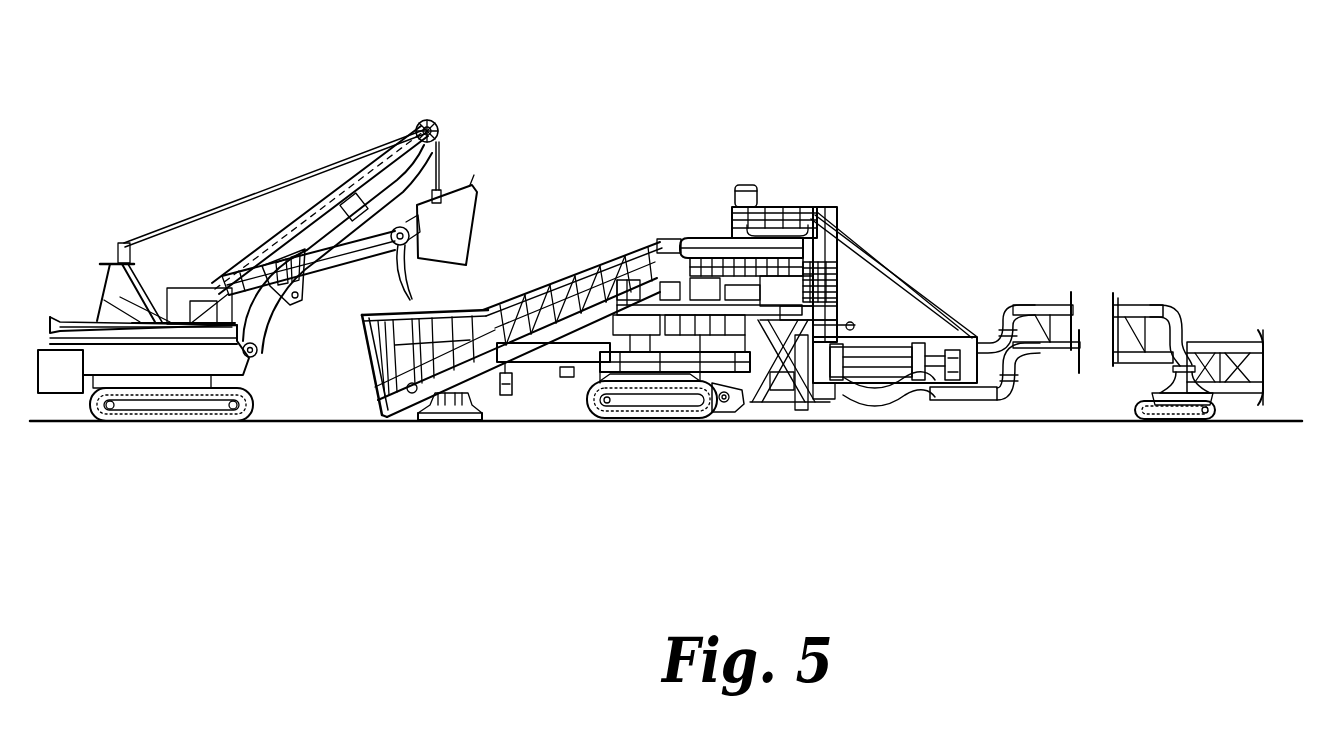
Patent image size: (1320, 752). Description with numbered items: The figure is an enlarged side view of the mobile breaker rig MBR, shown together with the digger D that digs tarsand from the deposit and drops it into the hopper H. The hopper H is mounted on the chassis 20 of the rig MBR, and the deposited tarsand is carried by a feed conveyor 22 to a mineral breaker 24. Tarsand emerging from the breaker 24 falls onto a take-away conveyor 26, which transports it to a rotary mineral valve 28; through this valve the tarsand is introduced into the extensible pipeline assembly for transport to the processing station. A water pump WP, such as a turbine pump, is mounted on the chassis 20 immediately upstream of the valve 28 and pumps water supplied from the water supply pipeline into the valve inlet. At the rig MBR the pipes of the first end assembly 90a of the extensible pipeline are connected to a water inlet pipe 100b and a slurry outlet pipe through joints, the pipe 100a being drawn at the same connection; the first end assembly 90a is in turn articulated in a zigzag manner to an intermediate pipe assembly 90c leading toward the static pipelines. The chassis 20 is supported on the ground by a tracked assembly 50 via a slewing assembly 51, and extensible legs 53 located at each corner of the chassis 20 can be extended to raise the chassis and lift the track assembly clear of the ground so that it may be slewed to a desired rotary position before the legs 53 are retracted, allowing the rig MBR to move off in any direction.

The digger D is at (157, 212).
The hopper H is at (360, 364).
The mobile breaker rig MBR is at (736, 155).
The chassis 20 is at (553, 365).
The feed conveyor 22 is at (597, 282).
The mineral breaker 24 is at (700, 280).
The take-away conveyor 26 is at (851, 312).
The rotary mineral valve 28 is at (893, 327).
The tracked assembly 50 is at (637, 430).
The slewing assembly 51 is at (712, 390).
The extensible legs 53 is at (505, 385).
The water pump WP is at (816, 385).
The lower pipe 100a is at (962, 390).
The water inlet pipe 100b is at (990, 333).
The first end assembly 90a is at (1149, 296).
The intermediate pipe assembly 90c is at (1228, 328).